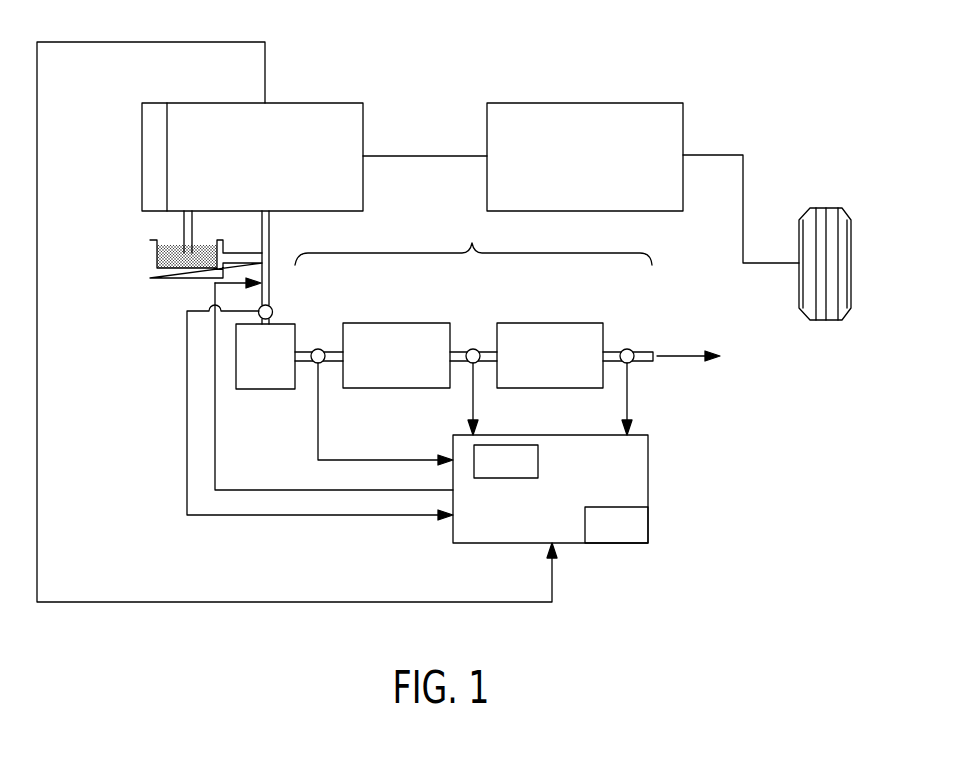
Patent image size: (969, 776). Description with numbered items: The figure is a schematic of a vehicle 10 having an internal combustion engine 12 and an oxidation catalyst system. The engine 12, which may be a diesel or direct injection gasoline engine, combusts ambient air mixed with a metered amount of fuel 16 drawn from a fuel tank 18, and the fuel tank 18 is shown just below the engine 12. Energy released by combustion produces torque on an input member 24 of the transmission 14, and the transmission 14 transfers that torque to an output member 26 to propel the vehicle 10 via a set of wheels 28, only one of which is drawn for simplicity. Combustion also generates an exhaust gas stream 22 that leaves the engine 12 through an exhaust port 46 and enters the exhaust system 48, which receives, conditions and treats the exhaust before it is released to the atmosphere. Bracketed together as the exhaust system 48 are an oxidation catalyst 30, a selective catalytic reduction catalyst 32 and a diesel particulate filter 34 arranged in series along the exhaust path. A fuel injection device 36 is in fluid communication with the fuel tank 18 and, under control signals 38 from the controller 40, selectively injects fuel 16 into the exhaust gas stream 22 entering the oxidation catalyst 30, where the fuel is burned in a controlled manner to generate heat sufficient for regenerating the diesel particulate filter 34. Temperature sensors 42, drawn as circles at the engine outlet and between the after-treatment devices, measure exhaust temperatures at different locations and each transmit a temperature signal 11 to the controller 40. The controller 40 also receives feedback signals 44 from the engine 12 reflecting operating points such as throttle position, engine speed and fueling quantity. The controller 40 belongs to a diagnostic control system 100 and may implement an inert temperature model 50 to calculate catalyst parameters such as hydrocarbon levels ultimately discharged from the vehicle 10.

The vehicle 10 is at (750, 64).
The temperature signals 11 is at (382, 458).
The internal combustion engine 12 is at (256, 168).
The transmission 14 is at (579, 170).
The fuel 16 is at (175, 243).
The fuel tank 18 is at (148, 268).
The exhaust gas stream 22 is at (678, 358).
The input member 24 is at (427, 155).
The output member 26 is at (712, 155).
The wheels 28 is at (826, 208).
The oxidation catalyst 30 is at (256, 368).
The selective catalytic reduction catalyst 32 is at (389, 368).
The diesel particulate filter 34 is at (542, 368).
The fuel injection device 36 is at (265, 290).
The control signals 38 is at (265, 488).
The controller 40 is at (541, 501).
The temperature sensors 42 is at (275, 307).
The feedback signals 44 is at (300, 603).
The exhaust port 46 is at (270, 247).
The exhaust system 48 is at (473, 241).
The inert temperature model 50 is at (495, 475).
The diagnostic control system 100 is at (603, 535).